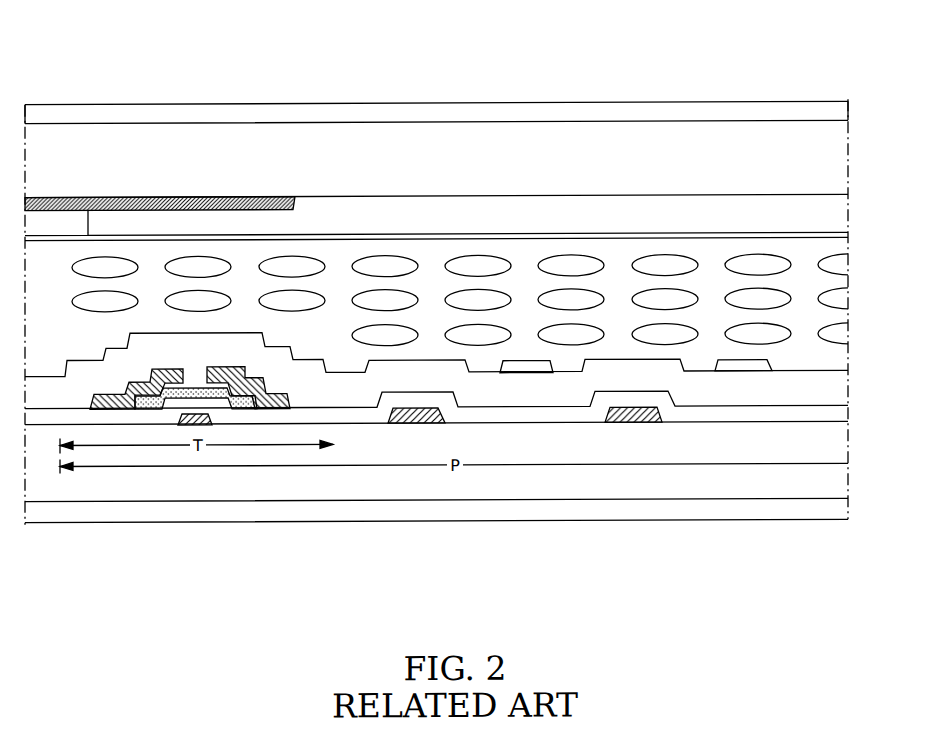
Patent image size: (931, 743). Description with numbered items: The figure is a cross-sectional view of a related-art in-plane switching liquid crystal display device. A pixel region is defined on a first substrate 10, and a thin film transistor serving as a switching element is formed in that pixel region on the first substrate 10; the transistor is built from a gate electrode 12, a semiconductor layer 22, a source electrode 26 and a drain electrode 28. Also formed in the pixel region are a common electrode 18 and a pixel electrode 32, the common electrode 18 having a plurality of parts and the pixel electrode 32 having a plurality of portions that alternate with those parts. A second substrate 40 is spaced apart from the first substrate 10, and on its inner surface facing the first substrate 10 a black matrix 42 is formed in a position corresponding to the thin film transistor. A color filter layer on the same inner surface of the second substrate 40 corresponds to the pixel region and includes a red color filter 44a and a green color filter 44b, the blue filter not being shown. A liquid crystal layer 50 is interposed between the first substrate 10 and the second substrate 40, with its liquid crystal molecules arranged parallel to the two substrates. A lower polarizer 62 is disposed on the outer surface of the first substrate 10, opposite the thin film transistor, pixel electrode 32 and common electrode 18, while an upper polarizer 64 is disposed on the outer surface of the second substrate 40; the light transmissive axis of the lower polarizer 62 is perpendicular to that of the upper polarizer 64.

The first substrate 10 is at (806, 489).
The gate electrode 12 is at (190, 425).
The common electrode 18 is at (428, 422).
The semiconductor layer 22 is at (247, 408).
The source electrode 26 is at (168, 367).
The drain electrode 28 is at (240, 367).
The pixel electrode 32 is at (527, 366).
The second substrate 40 is at (465, 169).
The black matrix 42 is at (218, 203).
The red color filter 44a is at (72, 222).
The green color filter 44b is at (722, 203).
The liquid crystal layer 50 is at (836, 266).
The lower polarizer 62 is at (487, 517).
The upper polarizer 64 is at (506, 104).